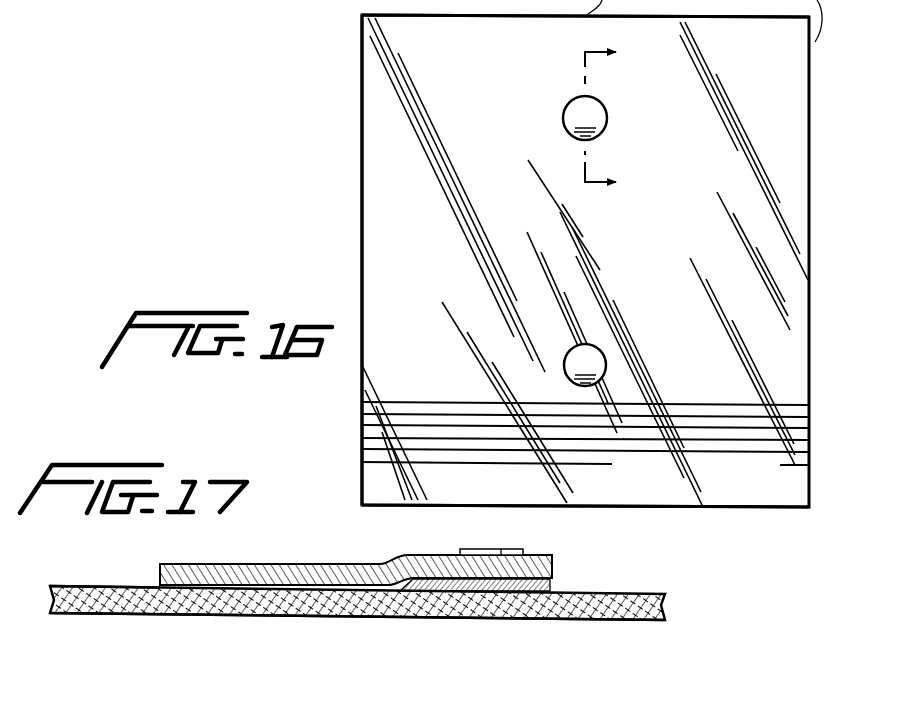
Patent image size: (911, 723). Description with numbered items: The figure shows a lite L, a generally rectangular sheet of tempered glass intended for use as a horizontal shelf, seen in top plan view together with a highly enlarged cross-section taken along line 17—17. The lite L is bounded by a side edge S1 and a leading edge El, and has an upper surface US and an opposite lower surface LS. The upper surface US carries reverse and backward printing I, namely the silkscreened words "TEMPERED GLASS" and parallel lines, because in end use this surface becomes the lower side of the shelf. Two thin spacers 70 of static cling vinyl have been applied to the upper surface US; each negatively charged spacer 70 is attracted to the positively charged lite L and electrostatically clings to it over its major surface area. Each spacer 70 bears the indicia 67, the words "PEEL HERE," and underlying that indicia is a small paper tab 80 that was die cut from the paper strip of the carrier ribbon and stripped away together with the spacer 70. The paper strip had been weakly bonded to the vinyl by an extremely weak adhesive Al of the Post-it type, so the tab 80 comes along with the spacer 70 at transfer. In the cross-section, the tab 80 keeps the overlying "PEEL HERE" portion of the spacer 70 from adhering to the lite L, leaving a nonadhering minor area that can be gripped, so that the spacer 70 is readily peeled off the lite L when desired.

In FIG. 16, the spacer 70 is at (562, 115).
In FIG. 17, the spacer 70 is at (337, 561).
In FIG. 17, the indicia 67 is at (502, 547).
In FIG. 17, the tab 80 is at (552, 583).
In FIG. 16, the section line 17 is at (614, 119).
In FIG. 16, the lite L is at (786, 229).
In FIG. 17, the lite L is at (102, 618).
In FIG. 16, the side edge S1 is at (360, 78).
In FIG. 16, the upper surface US is at (430, 168).
In FIG. 17, the upper surface US is at (123, 585).
In FIG. 17, the lower surface LS is at (253, 618).
In FIG. 16, the printing I is at (787, 438).
In FIG. 16, the leading edge El is at (753, 510).
In FIG. 17, the adhesive Al is at (500, 597).